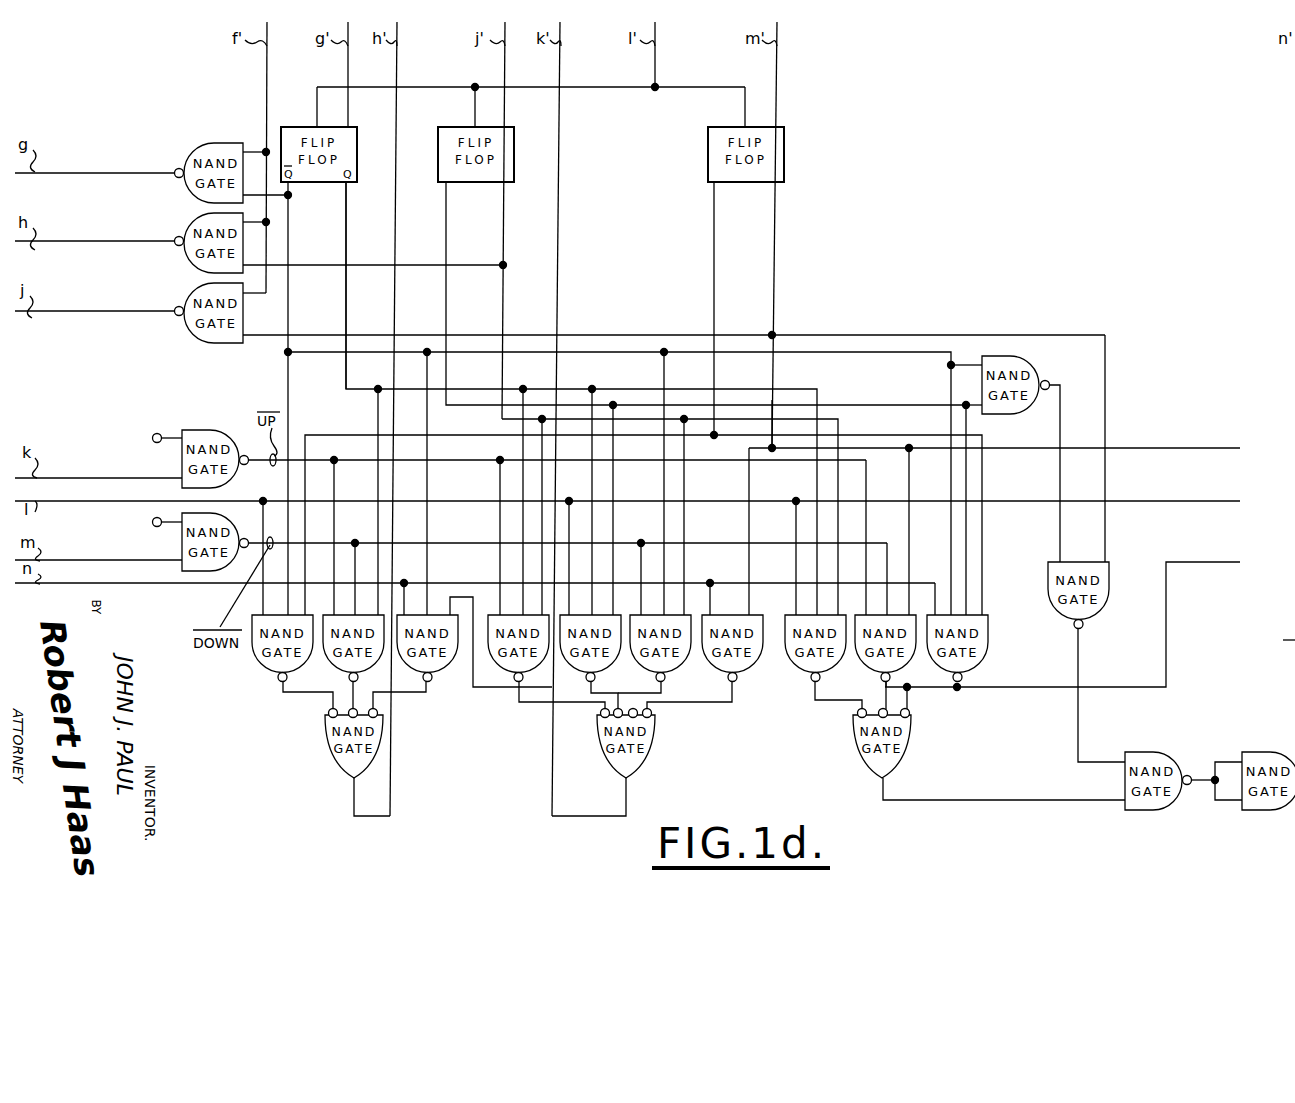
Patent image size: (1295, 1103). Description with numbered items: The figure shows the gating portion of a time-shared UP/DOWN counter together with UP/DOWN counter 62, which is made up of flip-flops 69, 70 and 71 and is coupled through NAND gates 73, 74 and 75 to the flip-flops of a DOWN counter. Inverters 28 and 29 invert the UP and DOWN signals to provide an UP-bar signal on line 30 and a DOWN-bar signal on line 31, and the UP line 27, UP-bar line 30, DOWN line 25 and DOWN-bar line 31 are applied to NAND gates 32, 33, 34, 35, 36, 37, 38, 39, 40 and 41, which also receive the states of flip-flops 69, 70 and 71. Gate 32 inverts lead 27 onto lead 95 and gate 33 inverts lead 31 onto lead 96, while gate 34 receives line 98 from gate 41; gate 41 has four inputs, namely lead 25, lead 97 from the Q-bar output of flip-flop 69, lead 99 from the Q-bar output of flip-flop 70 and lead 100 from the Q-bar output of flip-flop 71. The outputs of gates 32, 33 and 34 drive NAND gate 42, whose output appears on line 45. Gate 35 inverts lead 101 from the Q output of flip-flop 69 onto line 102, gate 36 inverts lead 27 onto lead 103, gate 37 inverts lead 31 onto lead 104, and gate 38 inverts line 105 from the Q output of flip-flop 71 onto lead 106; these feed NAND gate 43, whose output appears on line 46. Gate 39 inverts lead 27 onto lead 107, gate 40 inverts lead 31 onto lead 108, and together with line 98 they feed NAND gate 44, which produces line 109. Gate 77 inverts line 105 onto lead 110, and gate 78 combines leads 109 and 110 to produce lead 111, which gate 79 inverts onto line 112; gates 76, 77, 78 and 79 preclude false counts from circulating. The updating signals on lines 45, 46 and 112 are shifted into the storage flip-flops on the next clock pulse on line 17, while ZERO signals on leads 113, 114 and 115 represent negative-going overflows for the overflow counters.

The clock line 17 is at (658, 42).
The DOWN line 25 is at (193, 585).
The UP line 27 is at (236, 467).
The inverter 28 is at (200, 430).
The inverter 29 is at (182, 545).
The UP-bar line 30 is at (253, 452).
The DOWN-bar line 31 is at (257, 542).
The NAND gate 32 is at (252, 655).
The NAND gate 33 is at (323, 655).
The NAND gate 34 is at (457, 655).
The NAND gate 35 is at (488, 655).
The NAND gate 36 is at (620, 650).
The NAND gate 37 is at (690, 650).
The NAND gate 38 is at (762, 650).
The NAND gate 39 is at (845, 650).
The NAND gate 40 is at (915, 650).
The NAND gate 41 is at (987, 650).
The NAND gate 42 is at (325, 755).
The NAND gate 43 is at (597, 765).
The NAND gate 44 is at (853, 765).
The output line 45 is at (370, 816).
The output line 46 is at (588, 816).
The UP/DOWN counter 62 is at (561, 131).
The flip-flop 69 is at (292, 127).
The flip-flop 70 is at (448, 127).
The flip-flop 71 is at (785, 145).
The NAND gate 73 is at (220, 143).
The NAND gate 74 is at (190, 222).
The NAND gate 75 is at (190, 333).
The NAND gate 76 is at (1040, 360).
The NAND gate 77 is at (1048, 572).
The NAND gate 78 is at (1140, 812).
The NAND gate 79 is at (1257, 812).
The lead 95 is at (314, 692).
The lead 96 is at (376, 706).
The lead 97 is at (291, 200).
The line 98 is at (475, 690).
The lead 99 is at (448, 206).
The lead 100 is at (714, 225).
The lead 101 is at (346, 294).
The line 102 is at (520, 705).
The lead 103 is at (586, 697).
The lead 104 is at (665, 690).
The line 105 is at (775, 212).
The lead 106 is at (737, 704).
The lead 107 is at (818, 703).
The lead 108 is at (912, 700).
The line 109 is at (957, 802).
The lead 110 is at (1080, 652).
The lead 111 is at (1200, 775).
The line 112 is at (1285, 640).
The lead 113 is at (1201, 448).
The lead 114 is at (1193, 501).
The lead 115 is at (1193, 562).